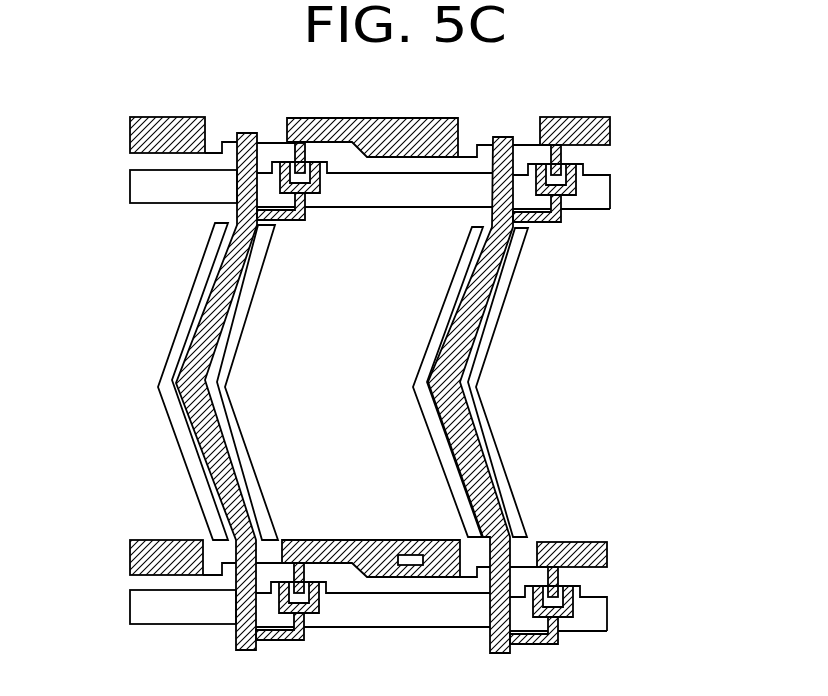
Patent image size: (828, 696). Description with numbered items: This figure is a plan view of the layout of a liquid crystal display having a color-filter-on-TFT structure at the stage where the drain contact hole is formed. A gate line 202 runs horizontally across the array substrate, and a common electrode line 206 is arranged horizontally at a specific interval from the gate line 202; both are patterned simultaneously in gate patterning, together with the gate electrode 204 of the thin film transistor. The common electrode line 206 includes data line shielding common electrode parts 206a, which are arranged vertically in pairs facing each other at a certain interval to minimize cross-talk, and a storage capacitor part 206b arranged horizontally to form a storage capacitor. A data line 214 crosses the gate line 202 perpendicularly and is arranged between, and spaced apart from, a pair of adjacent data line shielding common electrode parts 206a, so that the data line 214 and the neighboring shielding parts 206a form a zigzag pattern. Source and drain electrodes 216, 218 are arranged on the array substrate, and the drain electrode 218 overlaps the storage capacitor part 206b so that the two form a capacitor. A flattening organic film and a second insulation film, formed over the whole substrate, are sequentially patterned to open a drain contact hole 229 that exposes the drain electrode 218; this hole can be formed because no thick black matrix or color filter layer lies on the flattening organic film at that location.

The gate line 202 is at (605, 192).
The gate electrode 204 is at (279, 583).
The common electrode line 206 is at (480, 143).
The data line shielding common electrode part 206a is at (430, 415).
The storage capacitor part 206b is at (418, 540).
The data line 214 is at (473, 308).
The source electrode 216 is at (312, 617).
The drain electrode 218 is at (163, 130).
The drain contact hole 229 is at (407, 565).